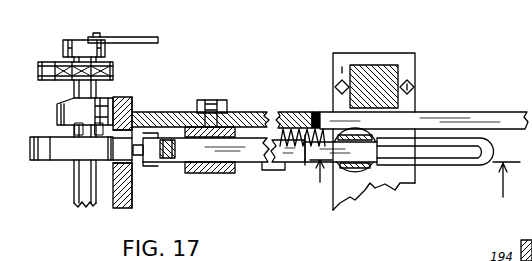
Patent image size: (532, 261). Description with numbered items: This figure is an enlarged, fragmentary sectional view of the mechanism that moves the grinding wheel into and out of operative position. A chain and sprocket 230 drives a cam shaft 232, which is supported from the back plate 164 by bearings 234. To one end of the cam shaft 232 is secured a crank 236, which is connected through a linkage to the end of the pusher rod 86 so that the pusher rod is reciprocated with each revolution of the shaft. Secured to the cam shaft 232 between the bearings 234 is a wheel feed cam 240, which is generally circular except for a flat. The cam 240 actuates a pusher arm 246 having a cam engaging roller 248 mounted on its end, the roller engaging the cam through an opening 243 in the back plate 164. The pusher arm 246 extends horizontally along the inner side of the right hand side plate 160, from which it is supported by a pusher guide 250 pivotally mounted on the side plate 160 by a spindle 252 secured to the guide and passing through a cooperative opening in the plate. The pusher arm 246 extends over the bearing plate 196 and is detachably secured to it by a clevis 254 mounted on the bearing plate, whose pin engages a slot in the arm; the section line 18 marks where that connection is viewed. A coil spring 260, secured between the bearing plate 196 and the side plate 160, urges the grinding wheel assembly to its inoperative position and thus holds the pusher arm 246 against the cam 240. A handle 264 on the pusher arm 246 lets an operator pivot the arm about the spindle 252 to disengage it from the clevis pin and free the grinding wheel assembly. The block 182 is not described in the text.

The section line 18- 18 is at (411, 178).
The pusher rod 86 is at (141, 38).
The right hand side plate 160 is at (252, 113).
The back plate 164 is at (128, 200).
The housing block 182 is at (380, 65).
The bearing plate 196 is at (370, 188).
The chain and sprocket 230 is at (38, 72).
The cam shaft 232 is at (80, 202).
The bearings 234 is at (57, 113).
The crank 236 is at (64, 41).
The wheel feed cam 240 is at (52, 153).
The opening 243 is at (132, 165).
The pusher arm 246 is at (292, 165).
The cam engaging roller 248 is at (165, 150).
The pusher guide 250 is at (228, 173).
The spindle 252 is at (212, 99).
The clevis 254 is at (350, 163).
The coil spring 260 is at (315, 130).
The handle 264 is at (475, 160).